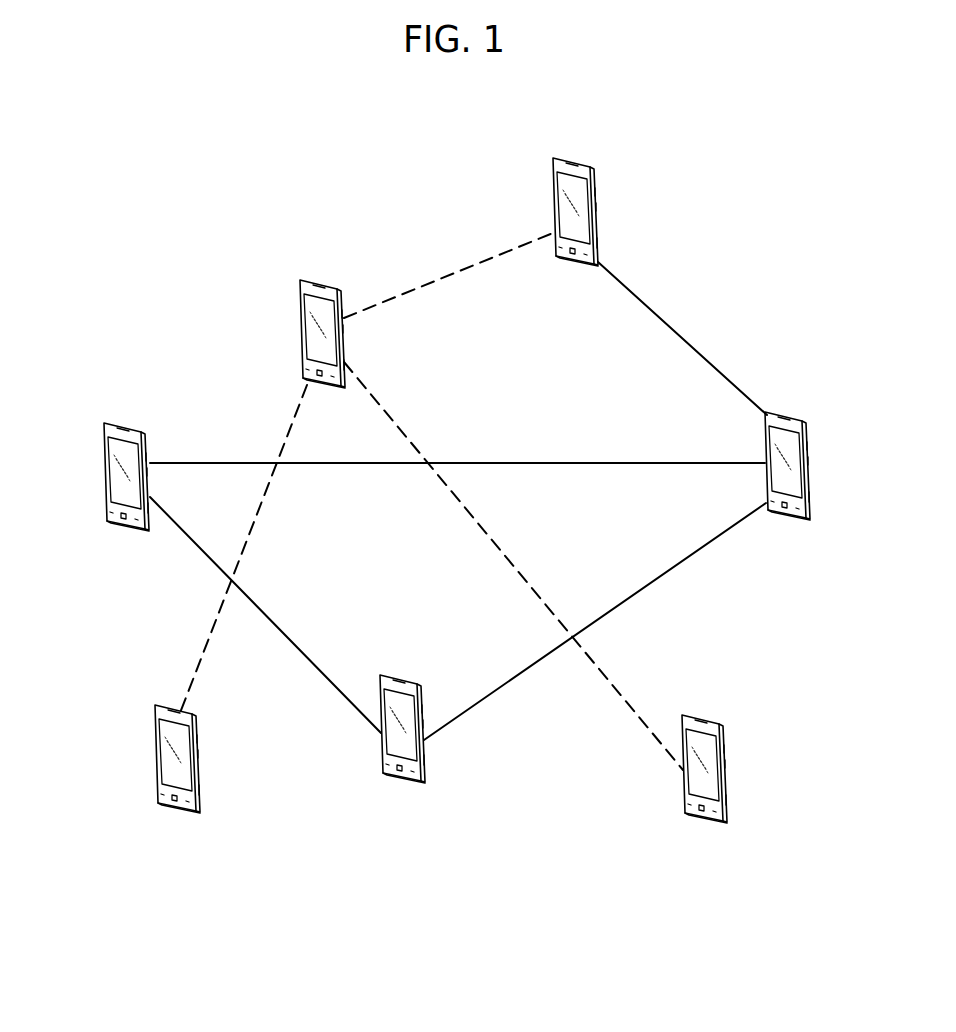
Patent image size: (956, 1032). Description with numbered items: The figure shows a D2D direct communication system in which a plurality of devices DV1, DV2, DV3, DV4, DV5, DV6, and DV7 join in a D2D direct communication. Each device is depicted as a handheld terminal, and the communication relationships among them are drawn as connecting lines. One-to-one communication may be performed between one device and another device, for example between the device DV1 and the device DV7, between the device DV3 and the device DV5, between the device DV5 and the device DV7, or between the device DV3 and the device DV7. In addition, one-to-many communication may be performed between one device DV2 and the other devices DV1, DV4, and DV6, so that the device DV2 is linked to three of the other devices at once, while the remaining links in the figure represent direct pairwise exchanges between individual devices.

The device DV1 is at (296, 334).
The device DV2 is at (126, 495).
The device DV3 is at (177, 779).
The device DV4 is at (402, 747).
The device DV5 is at (704, 788).
The device DV6 is at (787, 485).
The device DV7 is at (575, 232).